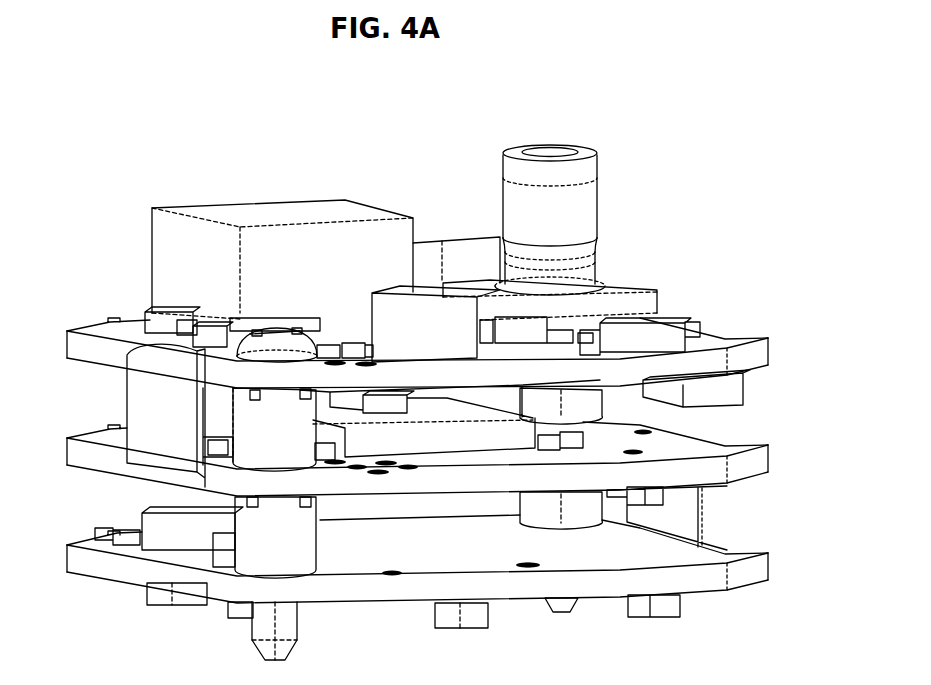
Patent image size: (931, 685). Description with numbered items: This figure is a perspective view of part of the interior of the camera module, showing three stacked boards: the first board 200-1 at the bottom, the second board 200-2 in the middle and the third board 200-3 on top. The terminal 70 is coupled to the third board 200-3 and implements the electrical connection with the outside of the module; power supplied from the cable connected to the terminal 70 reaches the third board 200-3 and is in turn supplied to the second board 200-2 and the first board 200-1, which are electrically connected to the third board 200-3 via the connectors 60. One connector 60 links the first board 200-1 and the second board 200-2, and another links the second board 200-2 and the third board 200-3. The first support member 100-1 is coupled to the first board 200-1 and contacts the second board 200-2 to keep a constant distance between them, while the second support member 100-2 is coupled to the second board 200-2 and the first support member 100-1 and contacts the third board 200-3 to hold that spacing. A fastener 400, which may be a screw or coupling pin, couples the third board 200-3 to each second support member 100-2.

The fastener 400 is at (267, 342).
The terminal 70 is at (578, 205).
The third board 200-3 is at (758, 352).
The second board 200-2 is at (760, 459).
The first board 200-1 is at (760, 567).
The connector 60 is at (153, 402).
The second support member 100-2 is at (253, 418).
The first support member 100-1 is at (257, 552).